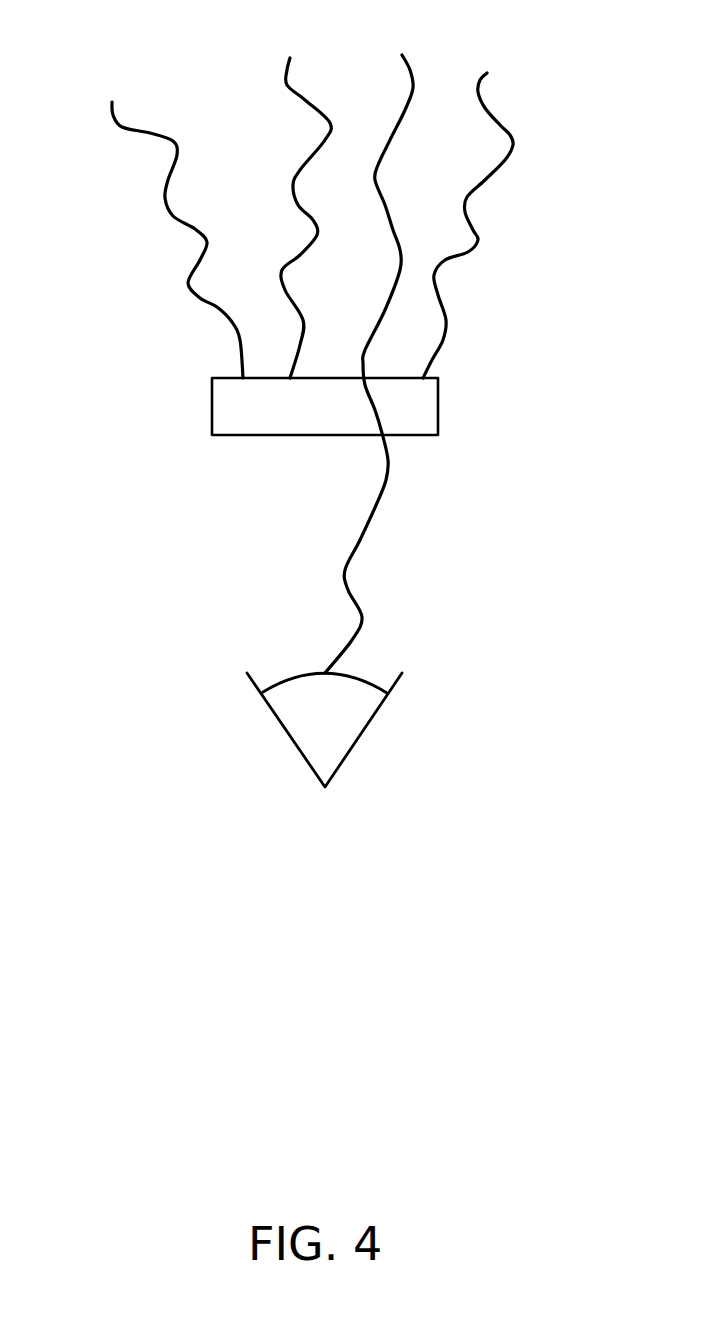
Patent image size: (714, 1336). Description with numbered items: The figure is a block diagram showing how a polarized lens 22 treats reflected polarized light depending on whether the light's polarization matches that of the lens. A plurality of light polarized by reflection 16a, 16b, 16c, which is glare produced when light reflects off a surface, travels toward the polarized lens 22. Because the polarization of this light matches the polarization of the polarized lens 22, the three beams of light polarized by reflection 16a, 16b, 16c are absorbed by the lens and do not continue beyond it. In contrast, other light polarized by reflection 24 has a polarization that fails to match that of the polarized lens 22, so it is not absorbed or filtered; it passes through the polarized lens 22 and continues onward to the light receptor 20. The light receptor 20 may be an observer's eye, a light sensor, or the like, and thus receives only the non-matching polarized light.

The light polarized by reflection 16a is at (120, 127).
The light polarized by reflection 16b is at (287, 85).
The light polarized by reflection 16c is at (507, 130).
The polarized lens 22 is at (438, 402).
The other light polarized by reflection 24 is at (388, 463).
The light receptor 20 is at (382, 703).